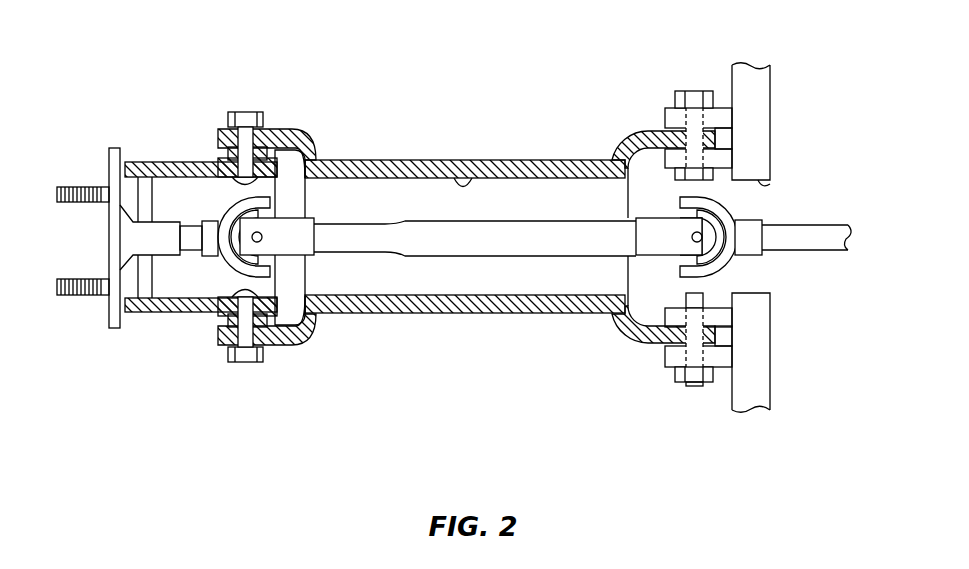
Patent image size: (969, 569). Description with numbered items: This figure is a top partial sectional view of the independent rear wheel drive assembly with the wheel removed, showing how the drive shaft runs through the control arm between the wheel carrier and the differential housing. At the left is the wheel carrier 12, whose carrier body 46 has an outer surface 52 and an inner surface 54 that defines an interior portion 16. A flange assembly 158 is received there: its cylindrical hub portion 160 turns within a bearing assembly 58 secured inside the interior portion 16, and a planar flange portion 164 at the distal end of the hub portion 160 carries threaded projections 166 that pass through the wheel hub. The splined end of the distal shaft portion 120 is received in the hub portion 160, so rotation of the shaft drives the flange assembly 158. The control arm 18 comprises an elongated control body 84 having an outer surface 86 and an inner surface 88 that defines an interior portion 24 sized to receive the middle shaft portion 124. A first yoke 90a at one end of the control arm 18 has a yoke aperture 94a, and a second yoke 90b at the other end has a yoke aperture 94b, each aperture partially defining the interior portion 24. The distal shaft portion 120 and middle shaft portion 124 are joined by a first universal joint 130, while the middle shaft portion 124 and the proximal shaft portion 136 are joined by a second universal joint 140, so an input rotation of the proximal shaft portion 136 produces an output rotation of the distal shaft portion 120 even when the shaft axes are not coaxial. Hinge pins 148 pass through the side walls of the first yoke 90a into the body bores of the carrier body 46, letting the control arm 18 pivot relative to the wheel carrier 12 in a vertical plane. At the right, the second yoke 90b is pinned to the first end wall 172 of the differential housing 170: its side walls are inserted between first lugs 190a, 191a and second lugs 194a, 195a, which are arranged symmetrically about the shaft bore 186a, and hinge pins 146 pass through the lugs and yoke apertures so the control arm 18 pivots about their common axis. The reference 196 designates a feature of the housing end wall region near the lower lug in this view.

The wheel carrier 12 is at (217, 313).
The interior portion 16 is at (195, 193).
The control arm 18 is at (465, 237).
The interior portion 24 is at (465, 244).
The carrier body 46 is at (141, 178).
The outer surface 52 is at (205, 314).
The inner surface 54 is at (200, 298).
The bearing assembly 58 is at (160, 192).
The control body 84 is at (352, 160).
The outer surface 86 is at (421, 160).
The inner surface 88 is at (473, 178).
The first yoke 90a is at (284, 128).
The second yoke 90b is at (653, 233).
The yoke aperture 94a is at (300, 323).
The yoke aperture 94b is at (630, 258).
The distal shaft portion 120 is at (193, 243).
The middle shaft portion 124 is at (512, 243).
The first universal joint 130 is at (273, 243).
The proximal shaft portion 136 is at (818, 250).
The second universal joint 140 is at (730, 203).
The hinge pin 146 is at (699, 90).
The hinge pin 148 is at (247, 111).
The flange assembly 158 is at (97, 272).
The hub portion 160 is at (145, 233).
The flange portion 164 is at (108, 170).
The threaded projections 166 is at (77, 204).
The differential housing 170 is at (792, 115).
The first end wall 172 is at (750, 412).
The shaft bore 186a is at (762, 183).
The first lug 190a is at (625, 133).
The first lug 191a is at (662, 340).
The second lug 194a is at (670, 108).
The second lug 195a is at (723, 368).
The flange end 196 is at (678, 318).